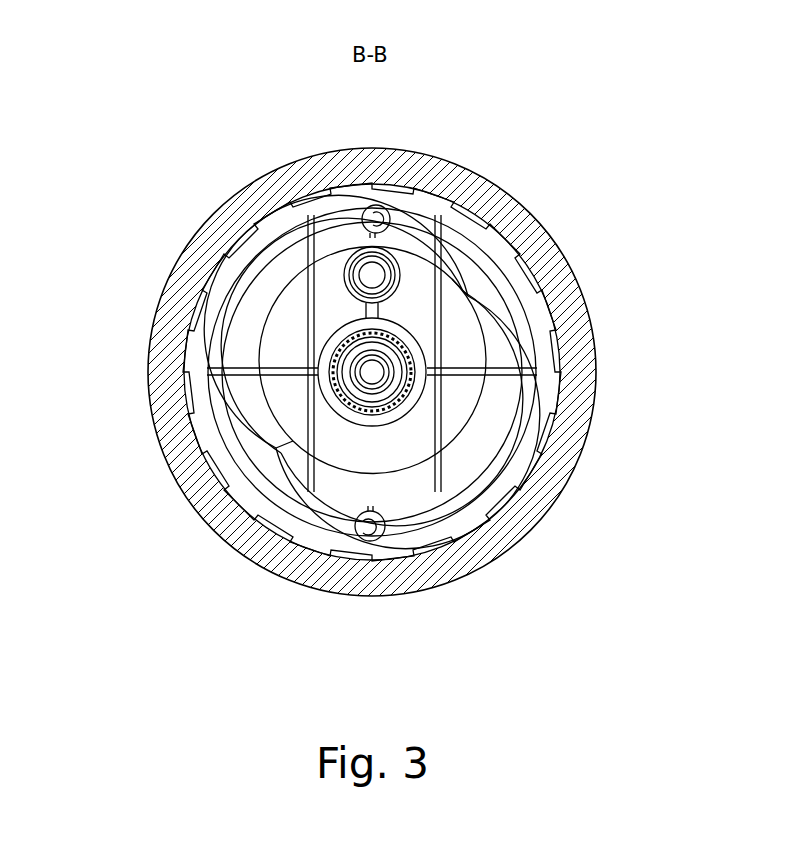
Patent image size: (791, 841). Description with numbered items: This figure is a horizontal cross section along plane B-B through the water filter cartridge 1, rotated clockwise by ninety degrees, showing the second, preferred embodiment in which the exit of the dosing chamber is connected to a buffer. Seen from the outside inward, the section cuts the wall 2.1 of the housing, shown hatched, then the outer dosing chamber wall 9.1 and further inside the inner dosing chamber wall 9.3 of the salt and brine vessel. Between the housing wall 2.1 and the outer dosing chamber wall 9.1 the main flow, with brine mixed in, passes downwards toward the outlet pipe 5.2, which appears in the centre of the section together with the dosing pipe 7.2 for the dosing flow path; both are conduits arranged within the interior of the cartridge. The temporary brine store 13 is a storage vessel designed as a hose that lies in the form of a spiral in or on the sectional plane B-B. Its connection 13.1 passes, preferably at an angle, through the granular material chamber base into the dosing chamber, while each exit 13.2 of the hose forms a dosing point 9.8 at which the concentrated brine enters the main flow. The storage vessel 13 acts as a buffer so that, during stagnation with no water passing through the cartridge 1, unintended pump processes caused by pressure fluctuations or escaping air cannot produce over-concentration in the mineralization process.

The water filter cartridge 1 is at (240, 78).
The wall 2.1 is at (537, 237).
The outer dosing chamber wall 9.1 is at (432, 168).
The inner dosing chamber wall 9.3 is at (392, 295).
The temporary brine store 13 is at (235, 328).
The dosing point 9.8 is at (460, 287).
The exit 13.2 is at (563, 278).
The connection 13.1 is at (376, 205).
The dosing pipe 7.2 is at (340, 277).
The outlet pipe 5.2 is at (393, 417).